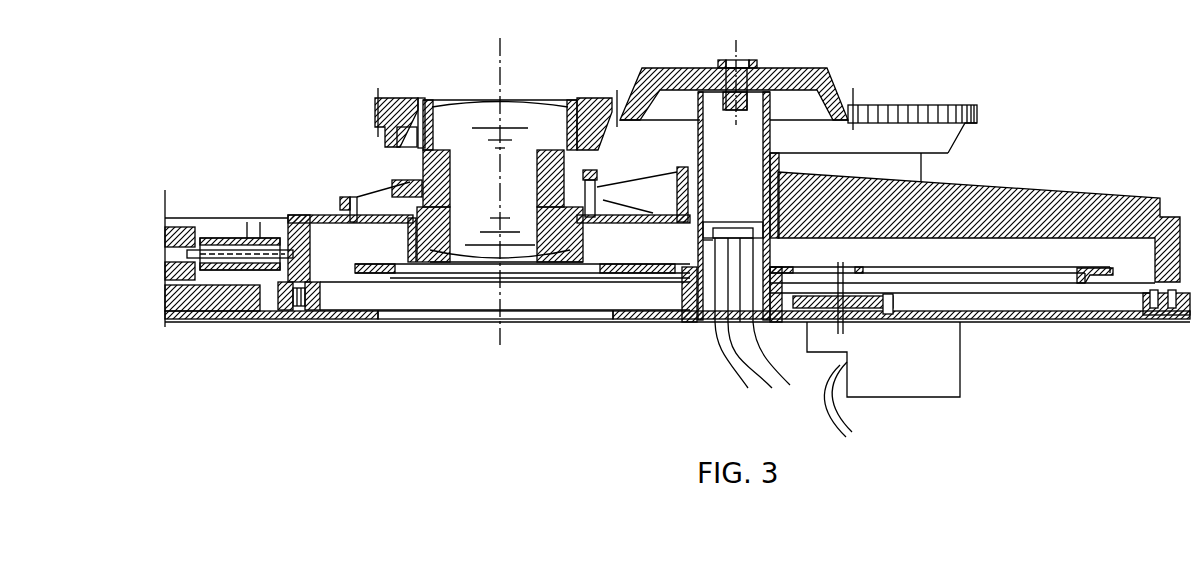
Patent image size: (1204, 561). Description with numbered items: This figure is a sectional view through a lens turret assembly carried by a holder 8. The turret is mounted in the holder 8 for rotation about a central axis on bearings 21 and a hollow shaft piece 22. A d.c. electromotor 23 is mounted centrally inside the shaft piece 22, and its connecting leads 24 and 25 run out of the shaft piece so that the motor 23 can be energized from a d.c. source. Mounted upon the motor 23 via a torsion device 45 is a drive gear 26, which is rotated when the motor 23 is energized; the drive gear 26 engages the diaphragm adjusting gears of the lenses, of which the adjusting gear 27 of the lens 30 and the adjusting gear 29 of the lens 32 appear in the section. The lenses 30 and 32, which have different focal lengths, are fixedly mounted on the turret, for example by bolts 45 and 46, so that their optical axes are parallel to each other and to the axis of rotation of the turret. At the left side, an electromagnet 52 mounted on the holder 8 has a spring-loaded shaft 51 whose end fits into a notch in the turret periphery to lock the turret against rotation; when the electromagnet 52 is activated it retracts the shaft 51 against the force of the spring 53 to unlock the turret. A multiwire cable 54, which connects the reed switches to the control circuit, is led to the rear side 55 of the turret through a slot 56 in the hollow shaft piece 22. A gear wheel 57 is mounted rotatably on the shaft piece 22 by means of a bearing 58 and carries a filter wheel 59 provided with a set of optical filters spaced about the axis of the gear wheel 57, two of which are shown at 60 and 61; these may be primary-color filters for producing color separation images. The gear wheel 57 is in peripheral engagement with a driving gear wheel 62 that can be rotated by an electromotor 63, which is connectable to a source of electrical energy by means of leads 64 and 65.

The holder 8 is at (254, 315).
The bearings 21 is at (785, 153).
The hollow shaft piece 22 is at (775, 103).
The d.c. electromotor 23 is at (688, 68).
The connecting lead 24 is at (716, 332).
The connecting lead 25 is at (760, 382).
The drive gear 26 is at (840, 72).
The diaphragm adjusting gear 27 is at (395, 98).
The diaphragm adjusting gear 29 is at (962, 126).
The lens 30 is at (493, 89).
The lens 32 is at (953, 84).
The torsion device / bolt 45 is at (343, 195).
The bolt 46 is at (597, 170).
The spring-loaded shaft 51 is at (212, 248).
The electromagnet 52 is at (187, 226).
The spring 53 is at (268, 238).
The multiwire cable 54 is at (742, 368).
The rear side 55 is at (703, 240).
The slot 56 is at (718, 222).
The gear wheel 57 is at (682, 298).
The bearing 58 is at (683, 328).
The filter wheel 59 is at (1078, 270).
The optical filter 60 is at (890, 268).
The optical filter 61 is at (572, 278).
The driving gear wheel 62 is at (893, 302).
The electromotor 63 is at (960, 362).
The lead 64 is at (858, 420).
The lead 65 is at (828, 405).